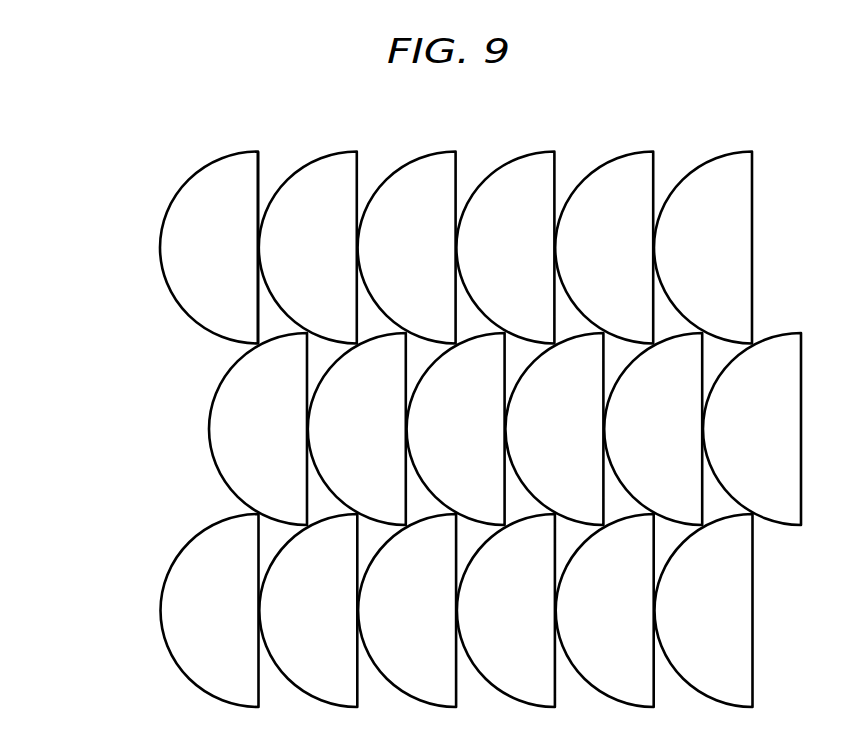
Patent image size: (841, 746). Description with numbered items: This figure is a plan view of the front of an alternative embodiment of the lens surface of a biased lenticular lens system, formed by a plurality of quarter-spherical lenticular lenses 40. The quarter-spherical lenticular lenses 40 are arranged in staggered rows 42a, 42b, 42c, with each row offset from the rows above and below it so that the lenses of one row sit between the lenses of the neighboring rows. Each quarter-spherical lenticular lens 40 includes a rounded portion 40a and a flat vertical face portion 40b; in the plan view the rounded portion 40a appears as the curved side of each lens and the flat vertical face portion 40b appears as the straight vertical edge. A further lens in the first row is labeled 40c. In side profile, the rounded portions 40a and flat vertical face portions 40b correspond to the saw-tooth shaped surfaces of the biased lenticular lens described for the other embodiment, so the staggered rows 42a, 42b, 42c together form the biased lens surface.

The quarter-spherical lenticular lens 40 is at (700, 197).
The rounded portion 40a is at (215, 189).
The flat vertical face portion 40b is at (260, 182).
The third lens element 40c is at (298, 185).
The staggered row 42a is at (135, 241).
The staggered row 42b is at (187, 421).
The staggered row 42c is at (133, 600).